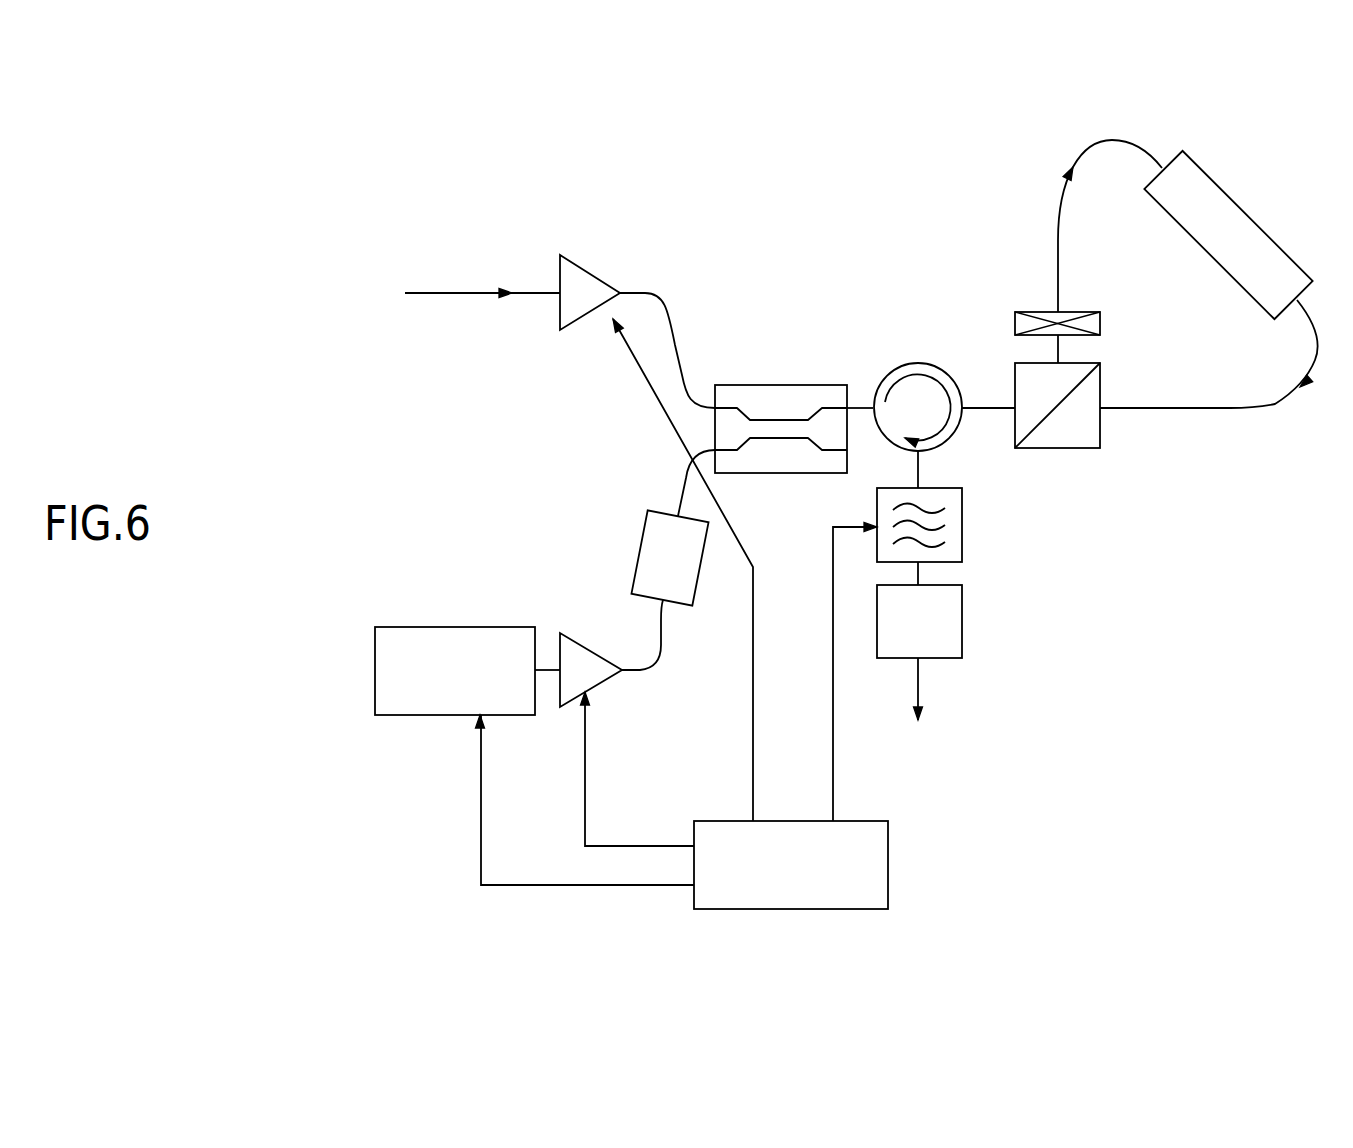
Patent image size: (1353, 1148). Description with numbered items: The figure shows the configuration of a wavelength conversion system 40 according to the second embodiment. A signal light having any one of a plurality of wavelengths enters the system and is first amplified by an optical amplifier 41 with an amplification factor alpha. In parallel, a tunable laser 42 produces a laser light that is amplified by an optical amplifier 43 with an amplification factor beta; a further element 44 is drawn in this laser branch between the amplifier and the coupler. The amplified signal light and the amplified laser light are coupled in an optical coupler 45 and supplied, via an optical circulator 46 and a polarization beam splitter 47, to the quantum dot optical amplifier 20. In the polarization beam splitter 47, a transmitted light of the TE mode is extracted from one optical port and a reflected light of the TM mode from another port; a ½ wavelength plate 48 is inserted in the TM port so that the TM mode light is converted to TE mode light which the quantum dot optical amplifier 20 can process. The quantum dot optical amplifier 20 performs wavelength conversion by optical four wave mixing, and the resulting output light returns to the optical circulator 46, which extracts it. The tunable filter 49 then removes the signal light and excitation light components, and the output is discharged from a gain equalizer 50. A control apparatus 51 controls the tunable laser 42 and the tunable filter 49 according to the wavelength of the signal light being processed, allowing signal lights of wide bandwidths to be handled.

The quantum dot optical amplifier 20 is at (1280, 243).
The wavelength conversion system 40 is at (615, 121).
The optical amplifier 41 is at (583, 316).
The tunable laser 42 is at (428, 716).
The optical amplifier 43 is at (596, 654).
The polarization controller 44 is at (640, 546).
The optical coupler 45 is at (736, 385).
The optical circulator 46 is at (905, 364).
The polarization beam splitter 47 is at (1060, 448).
The ½ wavelength plate 48 is at (1035, 312).
The tunable filter 49 is at (962, 535).
The gain equalizer 50 is at (962, 615).
The control apparatus 51 is at (888, 865).